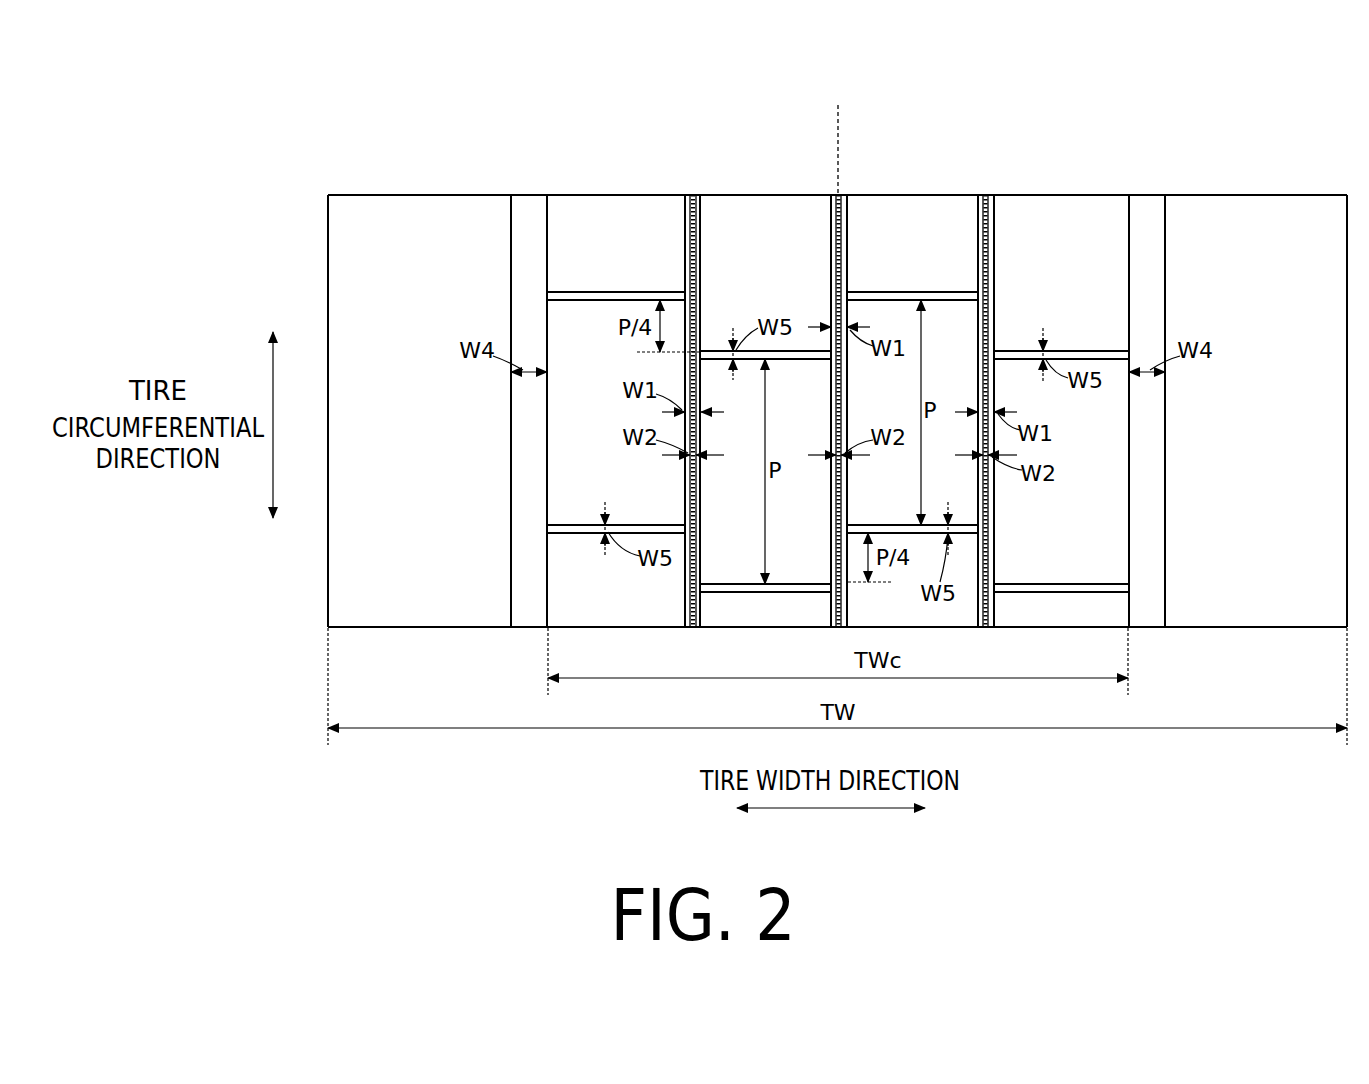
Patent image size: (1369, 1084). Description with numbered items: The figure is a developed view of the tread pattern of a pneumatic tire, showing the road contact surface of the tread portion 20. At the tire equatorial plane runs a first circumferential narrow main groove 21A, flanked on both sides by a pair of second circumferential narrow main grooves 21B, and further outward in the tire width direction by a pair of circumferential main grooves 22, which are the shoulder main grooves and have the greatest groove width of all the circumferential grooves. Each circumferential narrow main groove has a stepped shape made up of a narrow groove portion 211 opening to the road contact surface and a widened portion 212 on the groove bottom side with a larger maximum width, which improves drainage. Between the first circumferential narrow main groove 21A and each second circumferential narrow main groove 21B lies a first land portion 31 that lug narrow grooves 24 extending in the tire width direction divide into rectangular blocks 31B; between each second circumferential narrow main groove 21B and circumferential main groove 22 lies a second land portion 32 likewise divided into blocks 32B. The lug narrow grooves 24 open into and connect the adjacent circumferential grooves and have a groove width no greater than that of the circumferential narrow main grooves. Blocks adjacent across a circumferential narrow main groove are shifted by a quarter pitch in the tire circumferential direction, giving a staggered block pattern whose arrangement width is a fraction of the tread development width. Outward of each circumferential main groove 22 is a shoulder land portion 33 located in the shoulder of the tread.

The tread portion 20 is at (1194, 103).
The first circumferential narrow main groove 21A is at (853, 195).
The second circumferential narrow main groove 21B is at (692, 195).
The narrow groove portion 211 is at (688, 228).
The widened portion 212 is at (694, 258).
The circumferential main groove 22 is at (512, 194).
The lug narrow groove 24 is at (590, 292).
The first land portion 31 is at (839, 385).
The block 31B is at (748, 195).
The second land portion 32 is at (838, 385).
The block 32B is at (578, 195).
The shoulder land portion 33 is at (419, 215).